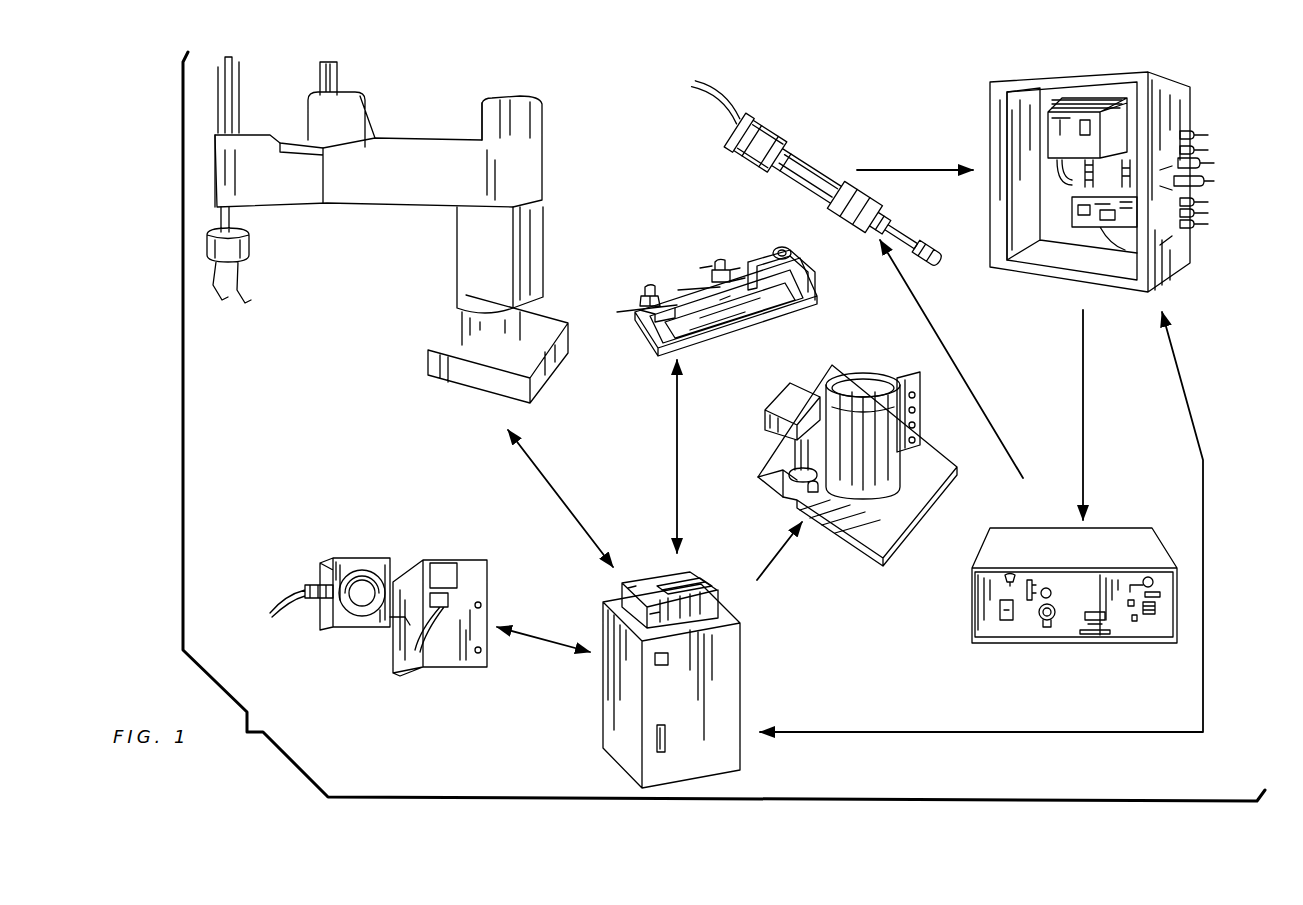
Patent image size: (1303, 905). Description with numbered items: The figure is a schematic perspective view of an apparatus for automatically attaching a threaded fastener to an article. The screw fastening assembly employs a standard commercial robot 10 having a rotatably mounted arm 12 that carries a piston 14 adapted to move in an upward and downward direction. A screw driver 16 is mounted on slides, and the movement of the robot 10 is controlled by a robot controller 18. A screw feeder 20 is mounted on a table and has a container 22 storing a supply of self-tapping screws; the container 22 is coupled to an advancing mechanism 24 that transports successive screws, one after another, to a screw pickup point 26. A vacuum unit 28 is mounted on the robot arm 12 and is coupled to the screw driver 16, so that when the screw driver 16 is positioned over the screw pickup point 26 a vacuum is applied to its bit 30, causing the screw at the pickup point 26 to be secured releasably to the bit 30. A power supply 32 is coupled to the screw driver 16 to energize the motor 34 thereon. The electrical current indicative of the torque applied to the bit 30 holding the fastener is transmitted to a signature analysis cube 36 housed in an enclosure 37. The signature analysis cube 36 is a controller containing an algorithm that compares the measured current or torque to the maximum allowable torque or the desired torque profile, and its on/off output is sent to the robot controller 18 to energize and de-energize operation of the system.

The robot 10 is at (602, 112).
The robot arm 12 is at (413, 150).
The piston 14 is at (265, 272).
The screw driver 16 is at (797, 161).
The robot controller 18 is at (755, 660).
The screw feeder 20 is at (968, 469).
The container 22 is at (882, 470).
The advancing mechanism 24 is at (720, 331).
The screw pickup point 26 is at (777, 247).
The vacuum unit 28 is at (434, 552).
The bit 30 is at (926, 239).
The power supply 32 is at (1150, 555).
The motor 34 is at (761, 139).
The signature analysis cube 36 is at (1110, 138).
The enclosure 37 is at (1188, 135).